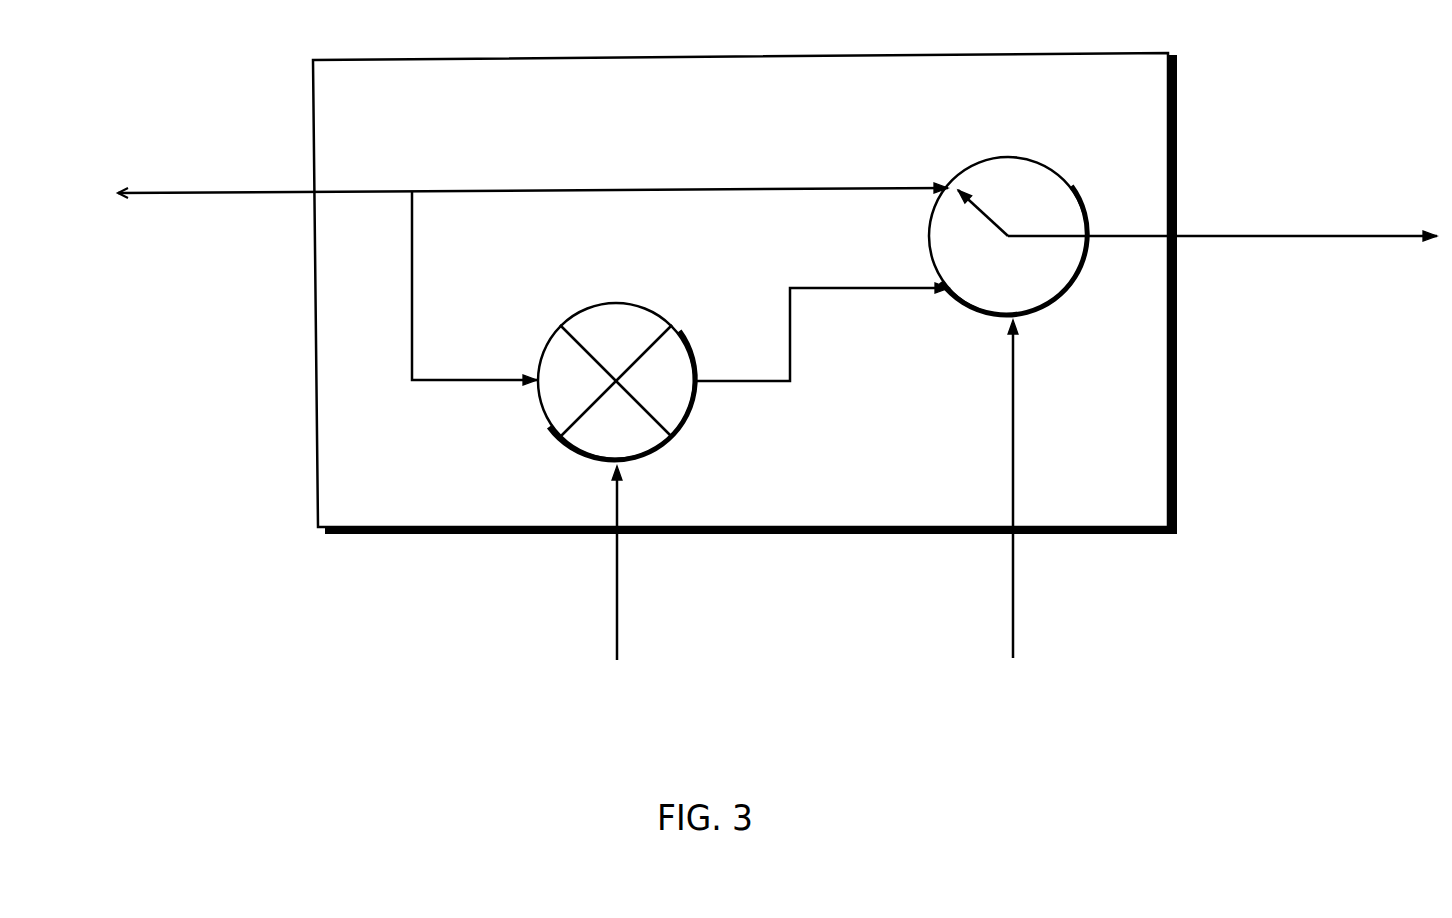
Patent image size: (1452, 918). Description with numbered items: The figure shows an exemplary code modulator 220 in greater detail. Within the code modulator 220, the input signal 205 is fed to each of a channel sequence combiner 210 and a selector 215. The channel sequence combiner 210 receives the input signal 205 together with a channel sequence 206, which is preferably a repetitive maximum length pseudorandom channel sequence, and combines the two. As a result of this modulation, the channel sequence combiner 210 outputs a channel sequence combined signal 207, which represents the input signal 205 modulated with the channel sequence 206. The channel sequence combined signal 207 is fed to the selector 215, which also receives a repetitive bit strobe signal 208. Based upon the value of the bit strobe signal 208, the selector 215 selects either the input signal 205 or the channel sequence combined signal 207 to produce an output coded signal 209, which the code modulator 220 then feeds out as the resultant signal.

The code modulator 220 is at (709, 107).
The input signal 205 is at (170, 193).
The channel sequence combiner 210 is at (615, 302).
The channel sequence combined signal 207 is at (840, 288).
The selector 215 is at (1007, 158).
The output coded signal 209 is at (1243, 236).
The channel sequence 206 is at (617, 578).
The bit strobe signal 208 is at (1015, 612).